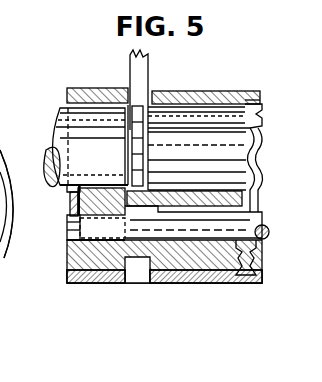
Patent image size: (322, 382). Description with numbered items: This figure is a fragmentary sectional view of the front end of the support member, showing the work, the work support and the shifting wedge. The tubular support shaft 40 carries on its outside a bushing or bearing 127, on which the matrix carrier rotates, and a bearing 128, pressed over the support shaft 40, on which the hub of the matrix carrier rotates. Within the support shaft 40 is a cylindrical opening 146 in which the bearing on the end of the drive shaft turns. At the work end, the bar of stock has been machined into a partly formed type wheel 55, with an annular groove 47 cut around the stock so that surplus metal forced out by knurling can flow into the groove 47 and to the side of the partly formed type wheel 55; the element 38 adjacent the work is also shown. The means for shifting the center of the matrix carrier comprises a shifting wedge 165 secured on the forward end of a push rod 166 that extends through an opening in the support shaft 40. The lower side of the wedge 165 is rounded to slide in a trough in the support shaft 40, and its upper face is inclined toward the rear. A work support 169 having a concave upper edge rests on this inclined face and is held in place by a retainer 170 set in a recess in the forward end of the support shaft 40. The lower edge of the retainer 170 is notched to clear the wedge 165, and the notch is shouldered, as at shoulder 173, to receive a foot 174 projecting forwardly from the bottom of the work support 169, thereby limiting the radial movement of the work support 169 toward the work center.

The spout / outlet tube 38 is at (130, 78).
The bearing 128 is at (202, 102).
The cylindrical opening 146 is at (258, 108).
The annular groove 47 is at (126, 151).
The partly formed type wheel 55 is at (145, 160).
The support shaft 40 is at (245, 148).
The push rod 166 is at (262, 222).
The retainer 170 is at (68, 188).
The work support 169 is at (70, 208).
The shoulder 173 is at (0, 226).
The foot 174 is at (80, 228).
The shifting wedge 165 is at (70, 243).
The bushing or bearing 127 is at (102, 282).